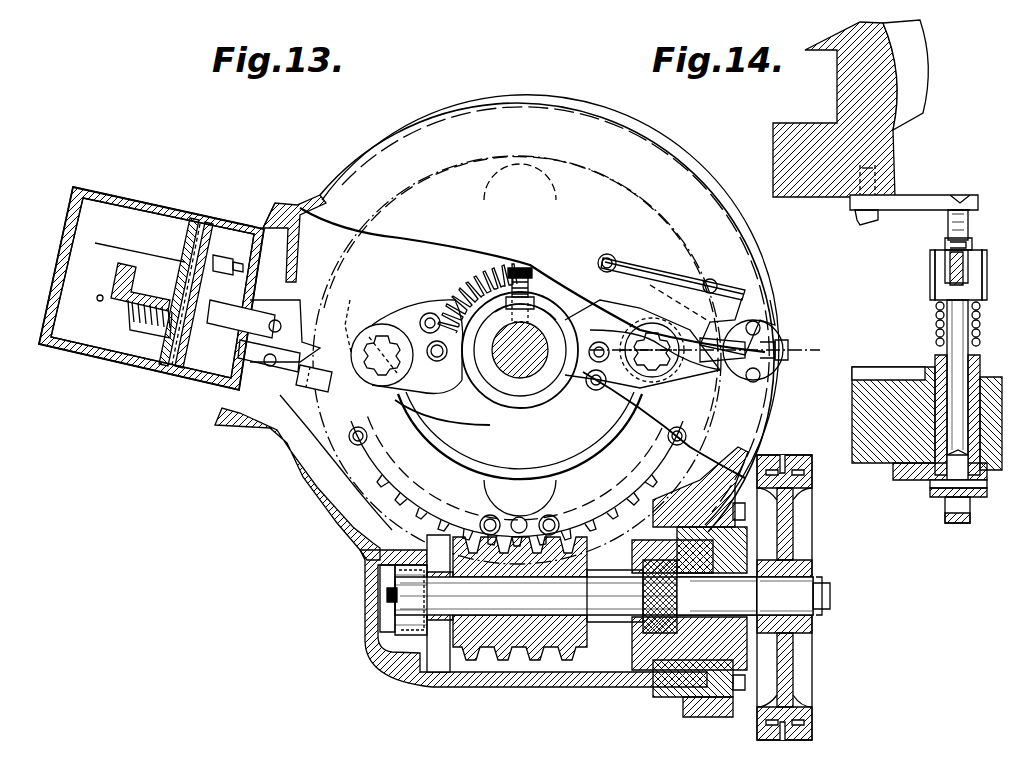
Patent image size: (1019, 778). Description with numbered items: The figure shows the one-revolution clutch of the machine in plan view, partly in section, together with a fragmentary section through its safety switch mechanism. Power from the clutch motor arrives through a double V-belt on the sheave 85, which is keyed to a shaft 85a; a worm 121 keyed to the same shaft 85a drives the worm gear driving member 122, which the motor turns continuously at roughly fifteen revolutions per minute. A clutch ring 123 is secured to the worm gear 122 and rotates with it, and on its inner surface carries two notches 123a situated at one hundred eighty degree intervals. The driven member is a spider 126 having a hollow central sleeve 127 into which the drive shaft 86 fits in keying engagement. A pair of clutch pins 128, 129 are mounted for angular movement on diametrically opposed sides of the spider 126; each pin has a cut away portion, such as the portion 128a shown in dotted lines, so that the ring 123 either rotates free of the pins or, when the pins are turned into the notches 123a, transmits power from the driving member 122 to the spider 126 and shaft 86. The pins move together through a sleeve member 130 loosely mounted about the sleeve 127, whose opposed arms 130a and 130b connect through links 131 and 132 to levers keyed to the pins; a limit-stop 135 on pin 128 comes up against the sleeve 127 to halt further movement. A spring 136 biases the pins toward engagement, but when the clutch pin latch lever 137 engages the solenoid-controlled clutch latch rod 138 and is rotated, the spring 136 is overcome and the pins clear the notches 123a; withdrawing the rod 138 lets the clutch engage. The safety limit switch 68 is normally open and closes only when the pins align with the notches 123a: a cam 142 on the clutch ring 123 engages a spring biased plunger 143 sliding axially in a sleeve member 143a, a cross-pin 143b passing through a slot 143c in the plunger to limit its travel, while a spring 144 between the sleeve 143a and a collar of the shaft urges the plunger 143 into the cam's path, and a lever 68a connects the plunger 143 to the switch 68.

In FIG. 13, the safety limit switch 68 is at (650, 284).
In FIG. 13, the lever 68a is at (745, 372).
In FIG. 13, the sheave 85 is at (814, 716).
In FIG. 13, the shaft 85a is at (812, 588).
In FIG. 13, the drive shaft 86 is at (519, 380).
In FIG. 13, the worm 121 is at (505, 664).
In FIG. 13, the worm gear driving member 122 is at (330, 442).
In FIG. 13, the clutch ring 123 is at (360, 268).
In FIG. 14, the clutch ring 123 is at (815, 200).
In FIG. 13, the notches 123a is at (540, 205).
In FIG. 13, the spider 126 is at (596, 325).
In FIG. 13, the hollow central sleeve 127 is at (556, 382).
In FIG. 13, the clutch pin 128 is at (382, 335).
In FIG. 13, the cut away portion 128a is at (355, 335).
In FIG. 13, the clutch pin 129 is at (640, 330).
In FIG. 13, the sleeve member 130 is at (535, 396).
In FIG. 13, the arm 130a is at (458, 394).
In FIG. 13, the arm 130b is at (580, 322).
In FIG. 13, the link 131 is at (432, 318).
In FIG. 13, the link 132 is at (602, 392).
In FIG. 13, the limit-stop 135 is at (448, 412).
In FIG. 13, the spring 136 is at (462, 300).
In FIG. 13, the clutch pin latch lever 137 is at (314, 388).
In FIG. 13, the clutch latch rod 138 is at (295, 328).
In FIG. 14, the cam 142 is at (946, 228).
In FIG. 14, the plunger 143 is at (940, 355).
In FIG. 14, the sleeve member 143a is at (932, 470).
In FIG. 14, the cross-pin 143b is at (930, 492).
In FIG. 14, the slot 143c is at (948, 510).
In FIG. 14, the spring 144 is at (936, 312).